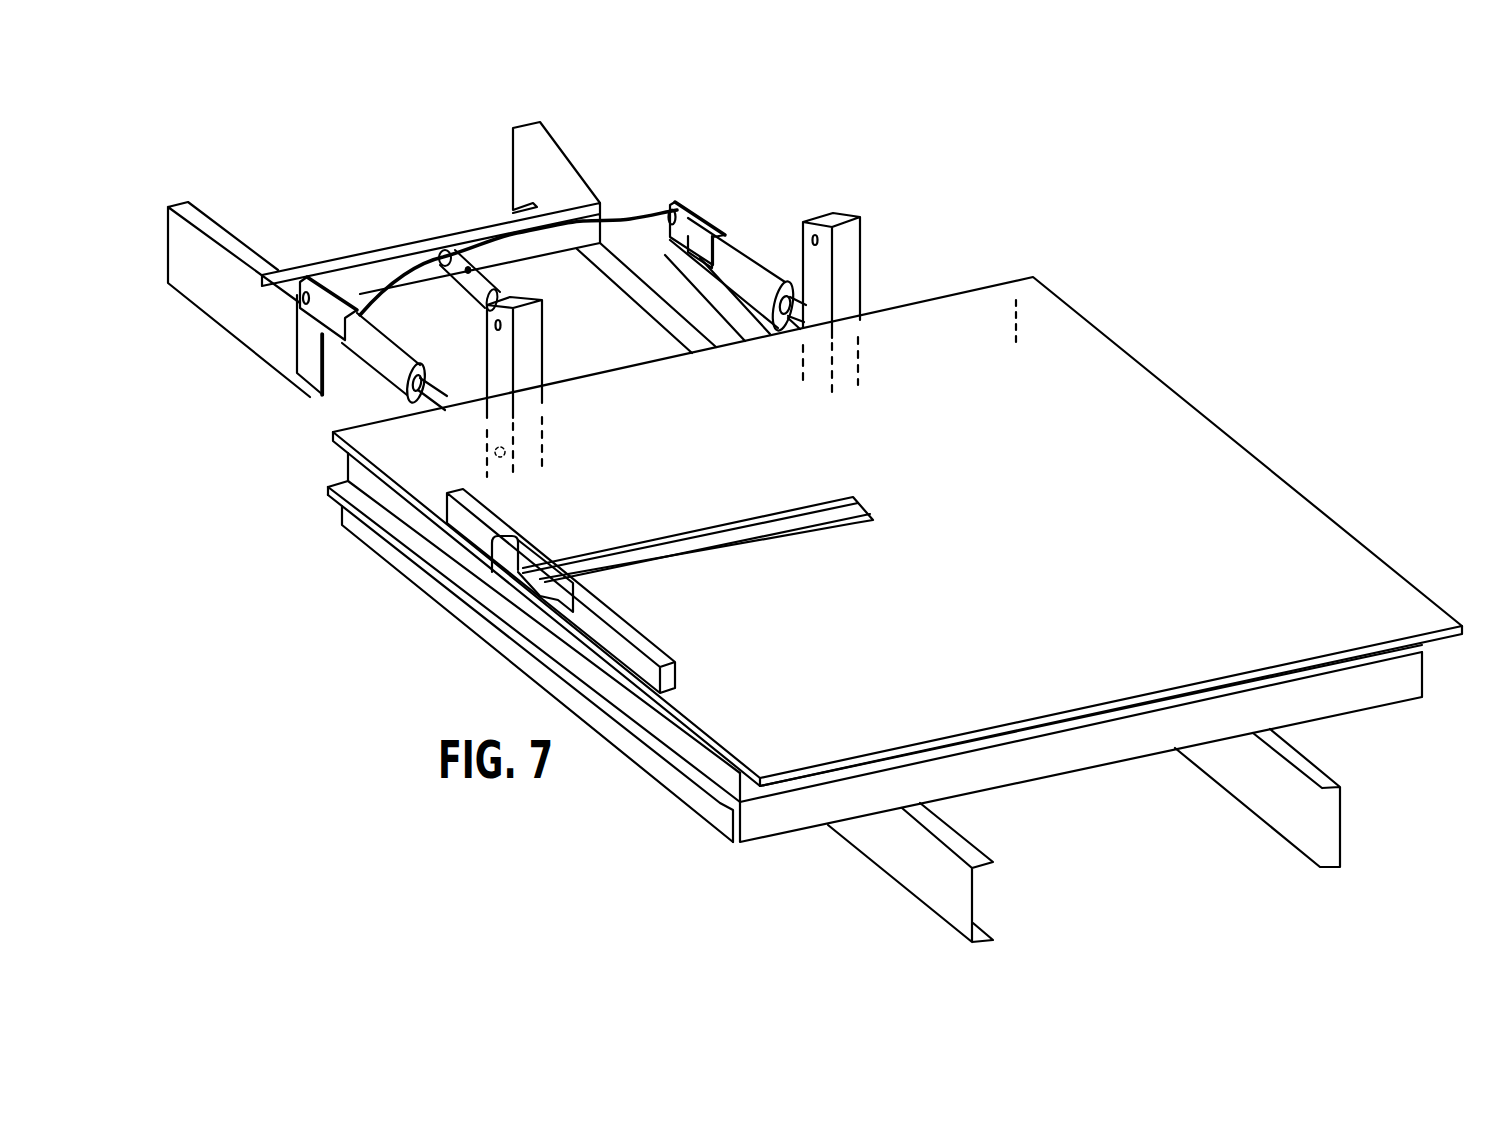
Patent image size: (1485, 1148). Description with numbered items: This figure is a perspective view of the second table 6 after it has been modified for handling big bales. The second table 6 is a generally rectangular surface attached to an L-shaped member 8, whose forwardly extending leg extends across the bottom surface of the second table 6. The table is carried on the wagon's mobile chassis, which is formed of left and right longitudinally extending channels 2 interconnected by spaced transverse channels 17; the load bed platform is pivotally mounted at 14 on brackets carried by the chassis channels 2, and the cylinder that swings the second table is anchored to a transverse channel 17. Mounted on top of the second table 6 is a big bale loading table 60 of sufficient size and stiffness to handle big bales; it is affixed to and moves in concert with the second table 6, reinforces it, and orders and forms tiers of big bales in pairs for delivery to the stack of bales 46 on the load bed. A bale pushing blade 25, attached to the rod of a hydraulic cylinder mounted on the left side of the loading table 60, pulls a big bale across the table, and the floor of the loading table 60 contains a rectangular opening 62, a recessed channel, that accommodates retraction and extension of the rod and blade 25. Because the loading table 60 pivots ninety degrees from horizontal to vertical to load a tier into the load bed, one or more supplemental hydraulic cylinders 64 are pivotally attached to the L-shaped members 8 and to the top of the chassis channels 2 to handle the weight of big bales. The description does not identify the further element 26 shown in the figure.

The longitudinally extending channel 2 is at (950, 888).
The second table 6 is at (400, 578).
The L-shaped member 8 is at (498, 330).
The pivotal mounting 14 is at (303, 295).
The transverse channel 17 is at (342, 252).
The bale pushing blade 25 is at (537, 577).
The frame channel 26 is at (885, 647).
The stack of bales 46 is at (452, 286).
The big bale loading table 60 is at (1167, 400).
The rectangular opening 62 is at (727, 548).
The supplemental hydraulic cylinder 64 is at (378, 356).